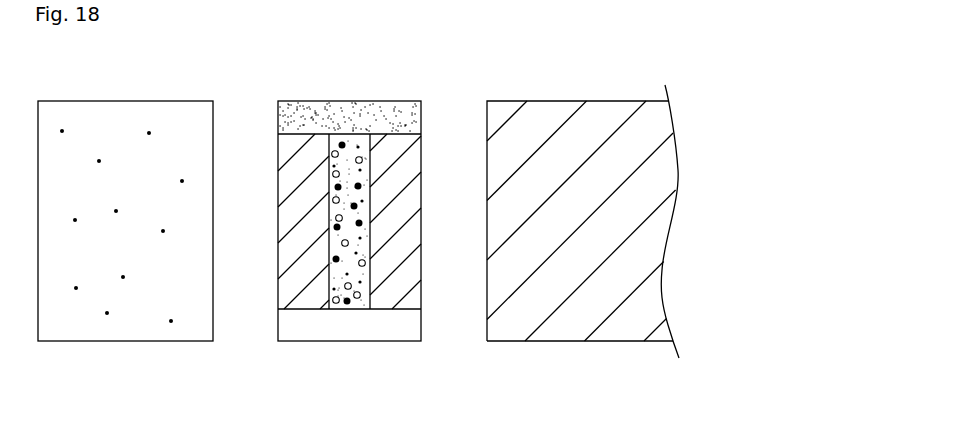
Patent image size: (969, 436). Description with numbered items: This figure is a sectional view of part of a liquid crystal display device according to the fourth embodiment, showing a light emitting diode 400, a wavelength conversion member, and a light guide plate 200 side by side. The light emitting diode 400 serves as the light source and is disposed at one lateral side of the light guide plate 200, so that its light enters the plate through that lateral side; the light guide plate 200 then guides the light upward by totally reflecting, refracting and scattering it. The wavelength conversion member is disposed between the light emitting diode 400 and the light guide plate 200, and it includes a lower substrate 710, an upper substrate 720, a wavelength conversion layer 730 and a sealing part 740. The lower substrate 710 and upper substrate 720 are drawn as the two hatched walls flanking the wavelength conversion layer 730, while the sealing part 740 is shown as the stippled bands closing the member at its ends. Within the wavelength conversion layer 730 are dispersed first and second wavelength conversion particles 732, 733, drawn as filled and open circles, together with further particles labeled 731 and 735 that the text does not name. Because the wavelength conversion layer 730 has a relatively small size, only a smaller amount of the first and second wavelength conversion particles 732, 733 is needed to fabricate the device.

The light guide plate 200 is at (575, 332).
The light emitting diode 400 is at (120, 333).
The lower substrate 710 is at (294, 298).
The upper substrate 720 is at (405, 272).
The wavelength conversion layer 730 is at (361, 285).
The first particles 731 is at (361, 303).
The first wavelength conversion particles 732 is at (370, 284).
The second wavelength conversion particles 733 is at (348, 304).
The fourth particles 735 is at (337, 304).
The sealing part 740 is at (378, 108).